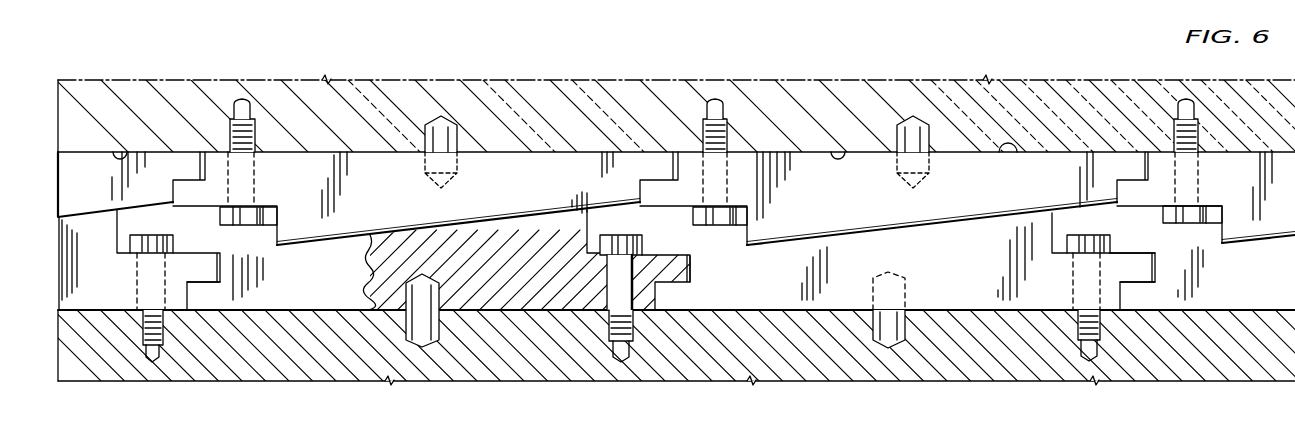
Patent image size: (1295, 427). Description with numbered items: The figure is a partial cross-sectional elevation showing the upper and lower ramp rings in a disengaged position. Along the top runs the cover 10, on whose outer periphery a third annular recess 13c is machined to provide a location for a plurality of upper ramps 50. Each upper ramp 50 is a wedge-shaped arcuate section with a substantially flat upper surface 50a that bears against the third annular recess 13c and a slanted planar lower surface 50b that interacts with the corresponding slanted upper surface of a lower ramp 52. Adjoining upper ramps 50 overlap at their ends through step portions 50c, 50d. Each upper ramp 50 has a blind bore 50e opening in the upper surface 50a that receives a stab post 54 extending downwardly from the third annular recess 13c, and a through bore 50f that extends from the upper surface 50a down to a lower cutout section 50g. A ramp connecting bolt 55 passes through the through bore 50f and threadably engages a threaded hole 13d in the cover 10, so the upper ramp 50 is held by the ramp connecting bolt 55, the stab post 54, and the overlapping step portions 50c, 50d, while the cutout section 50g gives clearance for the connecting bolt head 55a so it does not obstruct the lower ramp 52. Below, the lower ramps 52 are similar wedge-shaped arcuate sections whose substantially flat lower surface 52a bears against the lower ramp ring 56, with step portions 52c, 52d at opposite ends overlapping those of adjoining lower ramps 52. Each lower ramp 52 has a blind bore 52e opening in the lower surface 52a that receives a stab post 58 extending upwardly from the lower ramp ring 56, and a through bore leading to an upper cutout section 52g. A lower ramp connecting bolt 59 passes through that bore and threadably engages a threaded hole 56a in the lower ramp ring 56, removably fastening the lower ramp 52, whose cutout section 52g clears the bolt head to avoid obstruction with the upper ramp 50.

The cover 10 is at (537, 97).
The third annular recess 13c is at (124, 148).
The threaded hole 13d is at (236, 100).
The upper ramp 50 is at (95, 195).
The upper surface 50a is at (1012, 156).
The slanted planar lower surface 50b is at (368, 236).
The step portion 50c is at (657, 182).
The step portion 50d is at (1128, 180).
The blind bore 50e is at (455, 158).
The through bore 50f is at (255, 186).
The lower cutout section 50g is at (200, 208).
The lower ramp 52 is at (111, 286).
The lower surface 52a is at (312, 312).
The step portion 52c is at (690, 270).
The step portion 52d is at (214, 284).
The blind bore 52e is at (906, 291).
The upper cutout section 52g is at (1133, 253).
The stab post 54 is at (437, 117).
The ramp connecting bolt 55 is at (1185, 172).
The connecting bolt head 55a is at (258, 226).
The lower ramp ring 56 is at (505, 352).
The threaded hole 56a is at (146, 348).
The stab post 58 is at (418, 328).
The lower ramp connecting bolt 59 is at (608, 328).